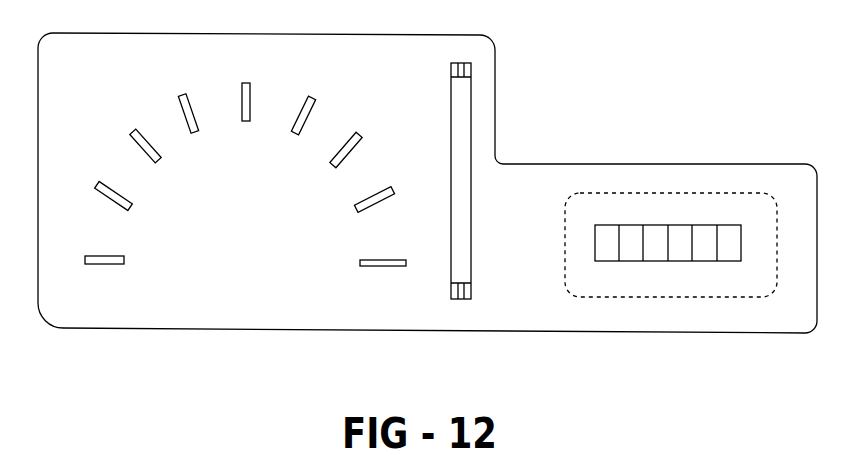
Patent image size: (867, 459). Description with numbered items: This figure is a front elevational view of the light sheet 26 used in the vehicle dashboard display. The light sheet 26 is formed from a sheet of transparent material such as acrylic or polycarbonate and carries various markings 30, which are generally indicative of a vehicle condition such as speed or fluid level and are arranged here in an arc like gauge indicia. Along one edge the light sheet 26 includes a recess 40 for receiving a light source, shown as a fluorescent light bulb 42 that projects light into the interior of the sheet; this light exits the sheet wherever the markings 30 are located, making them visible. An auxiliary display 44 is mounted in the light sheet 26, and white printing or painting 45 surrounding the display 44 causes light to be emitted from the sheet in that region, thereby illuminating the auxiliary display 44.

The light sheet 26 is at (332, 290).
The markings 30 is at (100, 264).
The recess 40 is at (472, 70).
The fluorescent light bulb 42 is at (472, 118).
The auxiliary display 44 is at (678, 225).
The white printing or painting 45 is at (757, 193).